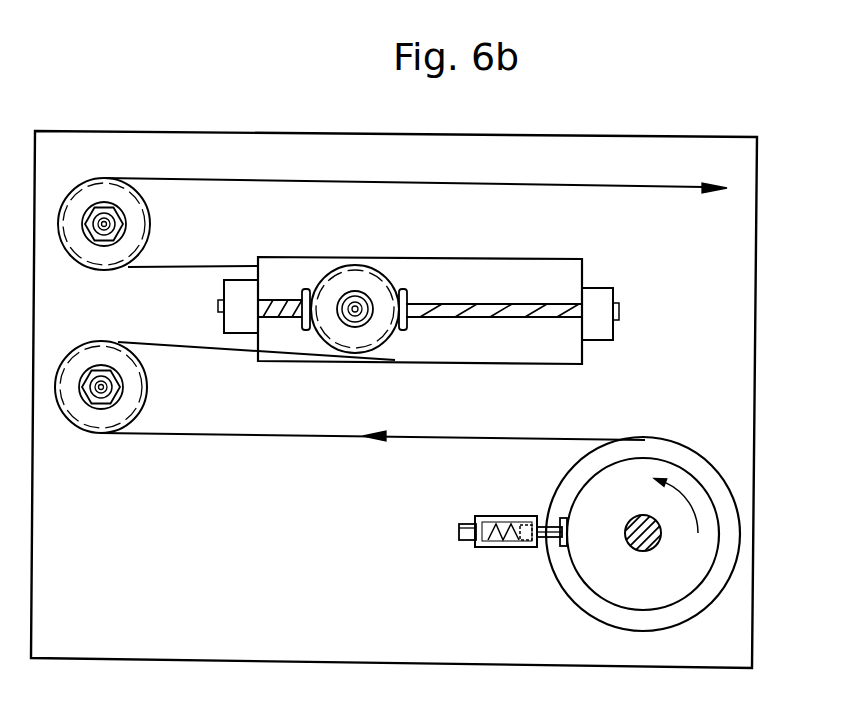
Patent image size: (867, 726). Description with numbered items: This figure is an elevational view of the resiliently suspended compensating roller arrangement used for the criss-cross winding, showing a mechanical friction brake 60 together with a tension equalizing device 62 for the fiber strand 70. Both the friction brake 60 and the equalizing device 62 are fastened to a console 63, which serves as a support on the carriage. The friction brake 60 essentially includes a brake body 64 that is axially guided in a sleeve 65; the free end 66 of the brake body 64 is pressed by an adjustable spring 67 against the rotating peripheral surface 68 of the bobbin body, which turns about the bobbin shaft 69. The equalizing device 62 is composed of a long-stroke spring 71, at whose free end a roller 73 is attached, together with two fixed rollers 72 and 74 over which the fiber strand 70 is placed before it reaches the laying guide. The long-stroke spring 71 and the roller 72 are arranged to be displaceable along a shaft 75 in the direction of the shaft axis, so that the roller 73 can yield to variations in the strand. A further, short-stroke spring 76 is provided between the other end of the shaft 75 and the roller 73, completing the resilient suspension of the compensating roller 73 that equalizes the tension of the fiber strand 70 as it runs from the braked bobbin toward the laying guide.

The mechanical friction brake 60 is at (486, 546).
The tension equalizing device 62 is at (408, 328).
The console 63 is at (683, 150).
The brake body 64 is at (554, 538).
The sleeve 65 is at (486, 530).
The free end 66 is at (568, 528).
The adjustable spring 67 is at (518, 528).
The rotating peripheral surface 68 is at (603, 603).
The bobbin shaft 69 is at (648, 540).
The fiber strand 70 is at (285, 436).
The long-stroke spring 71 is at (490, 302).
The fixed roller 72 is at (107, 435).
The roller 73 is at (355, 263).
The fixed roller 74 is at (150, 222).
The shaft 75 is at (543, 315).
The short-stroke spring 76 is at (286, 298).